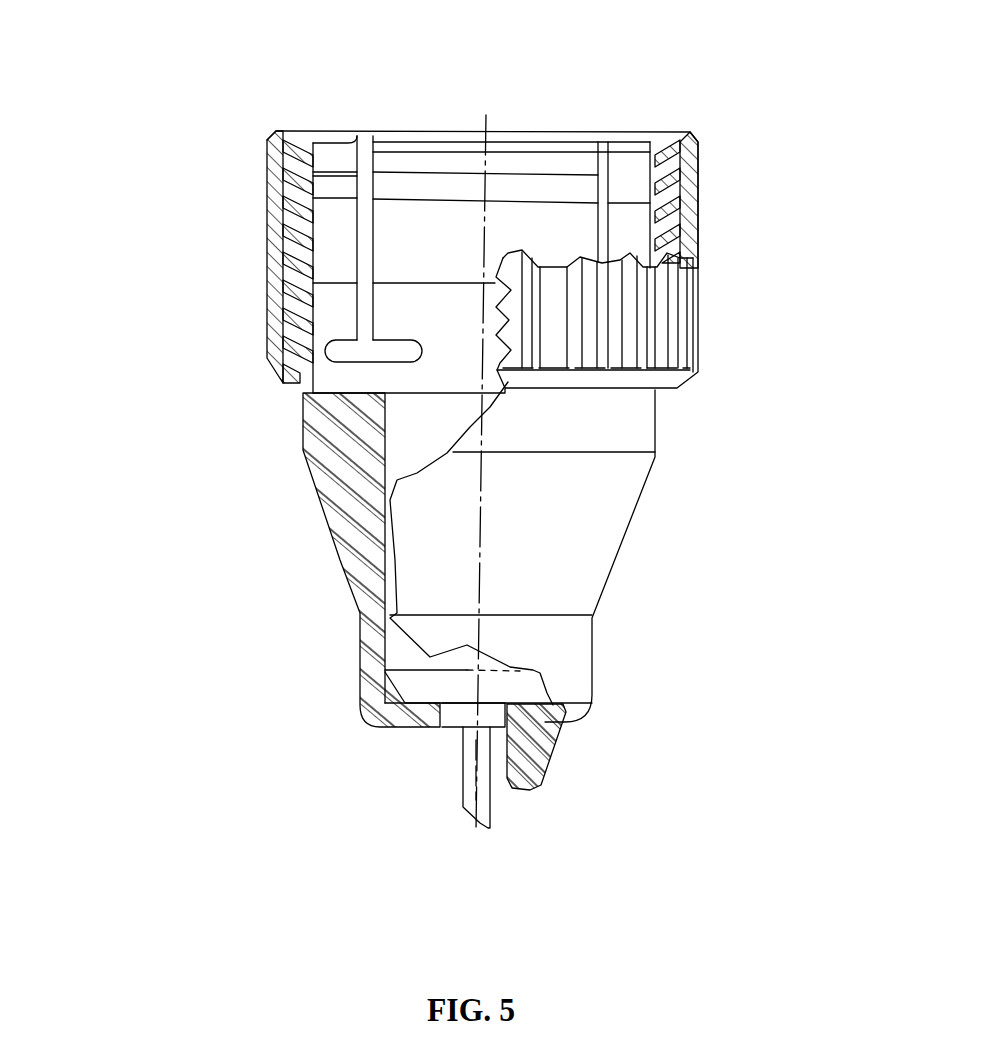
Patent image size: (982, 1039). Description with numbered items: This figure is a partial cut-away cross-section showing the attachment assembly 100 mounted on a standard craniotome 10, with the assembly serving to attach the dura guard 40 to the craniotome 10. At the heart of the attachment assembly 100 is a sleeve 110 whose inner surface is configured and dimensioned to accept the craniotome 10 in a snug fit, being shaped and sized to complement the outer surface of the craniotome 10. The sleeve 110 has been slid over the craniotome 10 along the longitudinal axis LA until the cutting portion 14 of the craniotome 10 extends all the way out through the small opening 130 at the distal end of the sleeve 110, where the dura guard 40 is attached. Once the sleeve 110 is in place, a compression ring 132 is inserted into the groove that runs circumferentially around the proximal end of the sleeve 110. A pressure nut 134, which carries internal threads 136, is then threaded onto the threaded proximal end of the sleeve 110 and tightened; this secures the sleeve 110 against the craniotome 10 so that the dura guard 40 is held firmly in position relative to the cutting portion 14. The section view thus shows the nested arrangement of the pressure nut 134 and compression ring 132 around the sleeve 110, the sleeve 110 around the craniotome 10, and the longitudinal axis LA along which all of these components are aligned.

The attachment assembly 100 is at (728, 145).
The compression ring 132 is at (293, 183).
The internal threads 136 is at (293, 262).
The pressure nut 134 is at (663, 312).
The sleeve 110 is at (425, 425).
The craniotome 10 is at (587, 517).
The longitudinal axis LA is at (477, 627).
The small opening 130 is at (467, 718).
The dura guard 40 is at (535, 752).
The cutting portion 14 is at (482, 801).